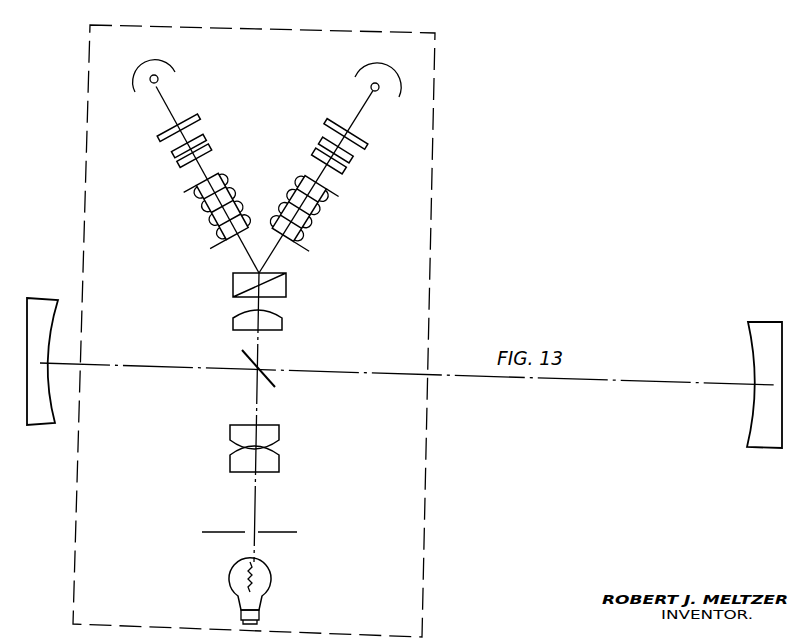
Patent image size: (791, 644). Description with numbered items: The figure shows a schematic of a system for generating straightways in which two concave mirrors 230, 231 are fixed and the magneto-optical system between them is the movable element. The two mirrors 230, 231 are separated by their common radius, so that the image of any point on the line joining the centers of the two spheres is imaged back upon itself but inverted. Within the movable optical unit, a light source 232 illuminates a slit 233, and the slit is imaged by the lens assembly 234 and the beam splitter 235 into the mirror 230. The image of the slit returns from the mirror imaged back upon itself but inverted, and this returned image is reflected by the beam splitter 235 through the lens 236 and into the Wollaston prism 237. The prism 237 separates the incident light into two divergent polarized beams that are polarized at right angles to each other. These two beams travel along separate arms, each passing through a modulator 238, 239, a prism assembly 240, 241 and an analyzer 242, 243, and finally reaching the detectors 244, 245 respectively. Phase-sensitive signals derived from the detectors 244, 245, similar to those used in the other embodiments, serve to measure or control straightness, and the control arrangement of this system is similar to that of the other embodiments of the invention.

The concave mirror 230 is at (38, 297).
The concave mirror 231 is at (753, 320).
The light source 232 is at (269, 583).
The slit 233 is at (278, 532).
The lens assembly 234 is at (287, 427).
The beam splitter 235 is at (262, 366).
The lens 236 is at (284, 323).
The Wollaston prism 237 is at (287, 291).
The modulator 238 is at (209, 215).
The modulator 239 is at (316, 225).
The prism assembly 240 is at (175, 160).
The prism assembly 241 is at (350, 164).
The analyzer 242 is at (160, 138).
The analyzer 243 is at (367, 148).
The detector 244 is at (136, 62).
The detector 245 is at (397, 74).